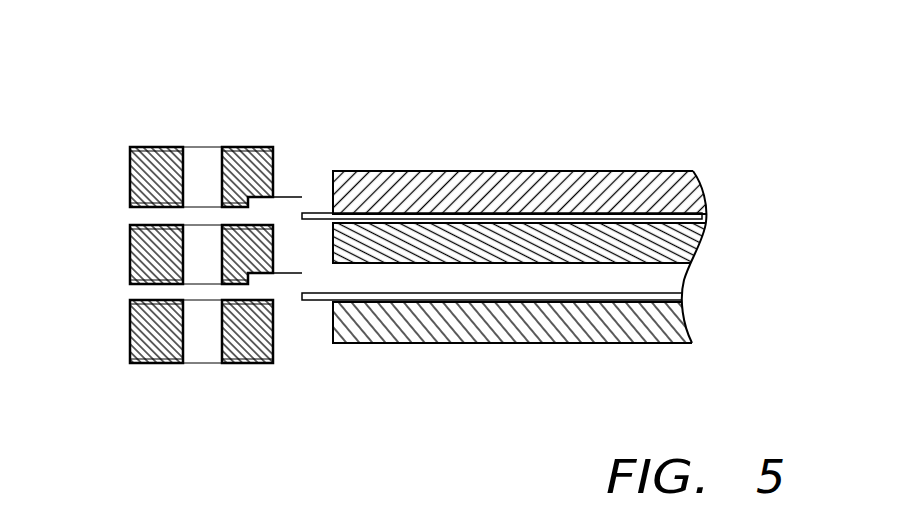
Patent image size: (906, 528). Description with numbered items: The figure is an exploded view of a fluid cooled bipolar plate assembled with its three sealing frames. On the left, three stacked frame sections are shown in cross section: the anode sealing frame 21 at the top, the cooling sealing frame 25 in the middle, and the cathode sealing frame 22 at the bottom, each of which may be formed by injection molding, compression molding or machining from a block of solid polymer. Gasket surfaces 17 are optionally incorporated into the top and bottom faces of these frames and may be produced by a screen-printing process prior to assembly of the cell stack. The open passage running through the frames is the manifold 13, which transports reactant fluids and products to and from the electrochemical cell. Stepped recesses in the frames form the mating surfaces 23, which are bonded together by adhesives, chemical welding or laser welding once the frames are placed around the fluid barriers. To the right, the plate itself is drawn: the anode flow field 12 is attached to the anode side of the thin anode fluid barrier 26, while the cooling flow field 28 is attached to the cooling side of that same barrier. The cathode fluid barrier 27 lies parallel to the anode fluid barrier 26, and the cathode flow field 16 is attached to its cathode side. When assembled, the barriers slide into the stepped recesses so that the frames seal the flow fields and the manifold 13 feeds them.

The anode flow field 12 is at (690, 195).
The manifold 13 is at (205, 167).
The cathode flow field 16 is at (683, 332).
The gasket surfaces 17 is at (150, 147).
The anode sealing frame 21 is at (130, 170).
The cathode sealing frame 22 is at (130, 340).
The mating surfaces 23 is at (248, 206).
The cooling sealing frame 25 is at (130, 258).
The anode fluid barrier 26 is at (705, 217).
The cathode fluid barrier 27 is at (680, 297).
The cooling flow field 28 is at (690, 250).